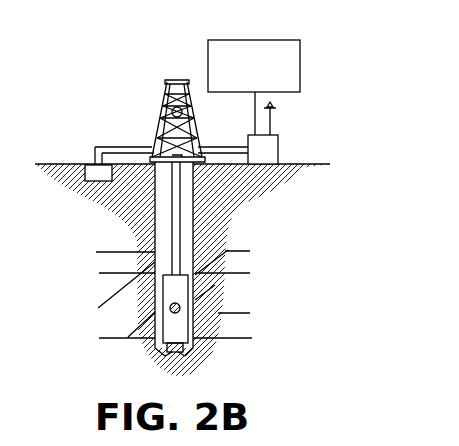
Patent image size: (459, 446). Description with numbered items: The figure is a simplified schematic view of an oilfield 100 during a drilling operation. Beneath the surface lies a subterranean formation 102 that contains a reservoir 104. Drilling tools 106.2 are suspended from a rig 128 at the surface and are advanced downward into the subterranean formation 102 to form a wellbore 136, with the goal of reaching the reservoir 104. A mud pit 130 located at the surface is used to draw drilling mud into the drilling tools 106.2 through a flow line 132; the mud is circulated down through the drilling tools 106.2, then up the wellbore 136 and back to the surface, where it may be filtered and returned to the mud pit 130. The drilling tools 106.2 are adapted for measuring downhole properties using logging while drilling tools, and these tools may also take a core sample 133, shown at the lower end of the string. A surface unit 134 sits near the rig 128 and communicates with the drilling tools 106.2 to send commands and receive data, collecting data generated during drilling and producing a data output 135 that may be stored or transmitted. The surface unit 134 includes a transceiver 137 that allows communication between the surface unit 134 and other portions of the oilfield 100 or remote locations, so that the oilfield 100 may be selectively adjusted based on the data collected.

The oilfield 100 is at (99, 83).
The subterranean formation 102 is at (265, 245).
The reservoir 104 is at (254, 303).
The drilling tools 106.2 is at (163, 303).
The rig 128 is at (162, 117).
The mud pit 130 is at (90, 182).
The flow line 132 is at (95, 151).
The core sample 133 is at (162, 346).
The surface unit 134 is at (280, 152).
The data output 135 is at (281, 40).
The wellbore 136 is at (193, 197).
The transceiver 137 is at (274, 115).